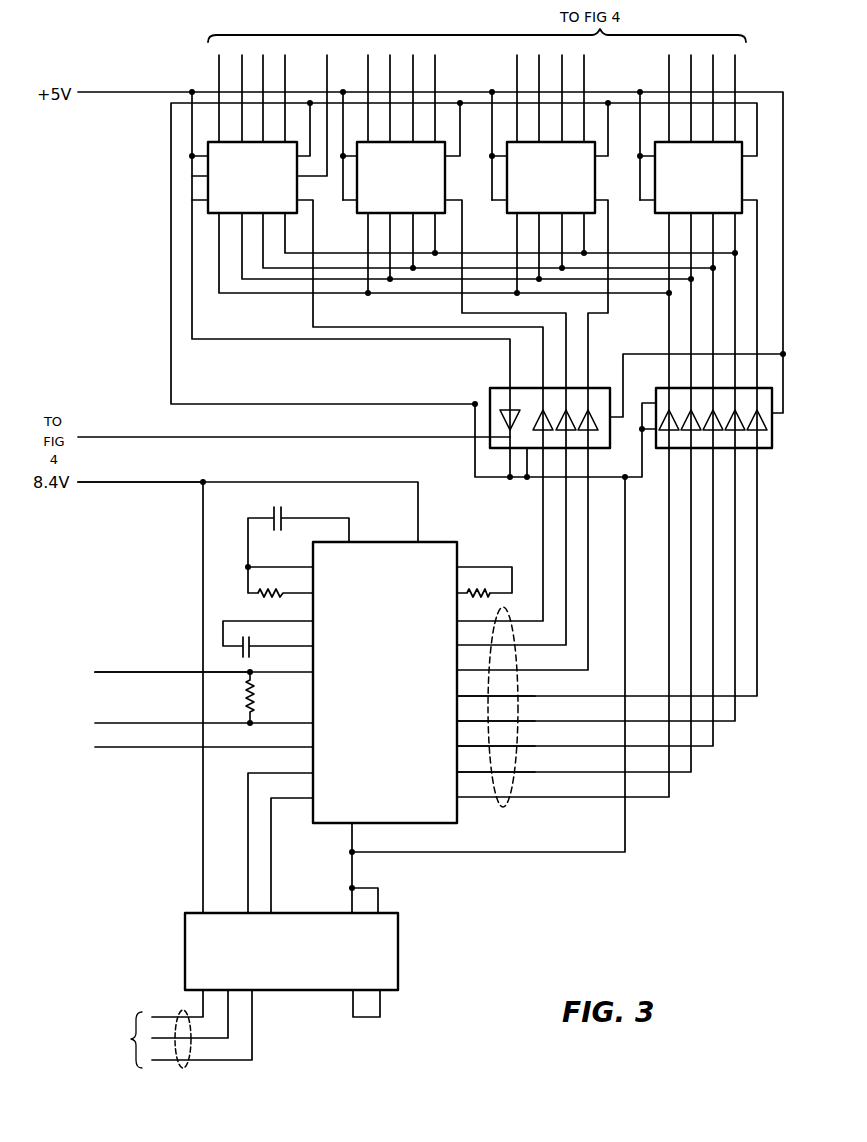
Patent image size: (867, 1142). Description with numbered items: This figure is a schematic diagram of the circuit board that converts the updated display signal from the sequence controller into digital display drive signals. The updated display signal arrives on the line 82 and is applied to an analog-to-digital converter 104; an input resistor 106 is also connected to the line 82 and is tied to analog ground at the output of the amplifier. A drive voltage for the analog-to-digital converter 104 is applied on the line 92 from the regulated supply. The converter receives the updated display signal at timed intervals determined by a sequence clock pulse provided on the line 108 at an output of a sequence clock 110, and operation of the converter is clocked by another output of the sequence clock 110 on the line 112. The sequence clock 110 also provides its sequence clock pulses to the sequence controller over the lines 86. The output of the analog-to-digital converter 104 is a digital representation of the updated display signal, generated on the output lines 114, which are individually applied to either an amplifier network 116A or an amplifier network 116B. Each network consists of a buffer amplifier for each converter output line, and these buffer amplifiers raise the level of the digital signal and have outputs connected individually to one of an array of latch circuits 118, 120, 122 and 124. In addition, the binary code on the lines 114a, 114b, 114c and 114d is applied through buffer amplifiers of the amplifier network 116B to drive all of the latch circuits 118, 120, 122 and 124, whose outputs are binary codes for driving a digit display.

The latch circuit 118 is at (265, 190).
The latch circuit 120 is at (414, 190).
The latch circuit 122 is at (564, 190).
The latch circuit 124 is at (711, 190).
The amplifier network 116A is at (497, 388).
The amplifier network 116B is at (661, 388).
The analog-to-digital converter 104 is at (437, 541).
The input resistor 106 is at (257, 706).
The line 92 is at (119, 482).
The line 82 is at (132, 669).
The line 112 is at (248, 856).
The line 108 is at (271, 871).
The sequence clock 110 is at (399, 913).
The output lines 114 is at (500, 806).
The line 114a is at (537, 720).
The line 114b is at (537, 746).
The line 114c is at (537, 772).
The line 114d is at (537, 798).
The lines 86 is at (186, 1068).